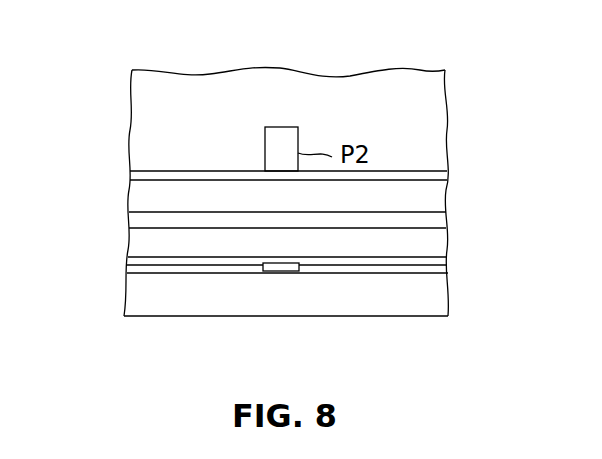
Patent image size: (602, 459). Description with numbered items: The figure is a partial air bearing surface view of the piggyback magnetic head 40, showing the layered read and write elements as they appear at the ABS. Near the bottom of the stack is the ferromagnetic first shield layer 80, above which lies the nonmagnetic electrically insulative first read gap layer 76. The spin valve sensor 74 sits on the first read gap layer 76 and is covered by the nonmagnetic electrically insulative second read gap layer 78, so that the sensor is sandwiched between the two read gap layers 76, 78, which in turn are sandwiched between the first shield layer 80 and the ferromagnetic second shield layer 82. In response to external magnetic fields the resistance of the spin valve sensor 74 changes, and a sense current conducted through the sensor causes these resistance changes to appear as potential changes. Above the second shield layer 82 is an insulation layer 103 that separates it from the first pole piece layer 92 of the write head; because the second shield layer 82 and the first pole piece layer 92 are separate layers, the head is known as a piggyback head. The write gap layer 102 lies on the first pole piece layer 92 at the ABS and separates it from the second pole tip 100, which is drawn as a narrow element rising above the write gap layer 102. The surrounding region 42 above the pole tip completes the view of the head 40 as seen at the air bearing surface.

The piggyback magnetic head 40 is at (470, 84).
The top layer 42 is at (132, 99).
The second pole tip 100 is at (274, 127).
The write gap layer 102 is at (200, 172).
The first pole piece layer 92 is at (136, 192).
The insulation layer 103 is at (440, 221).
The second shield layer 82 is at (133, 244).
The second read gap layer 78 is at (407, 262).
The first read gap layer 76 is at (193, 275).
The spin valve sensor 74 is at (280, 271).
The first shield layer 80 is at (440, 297).